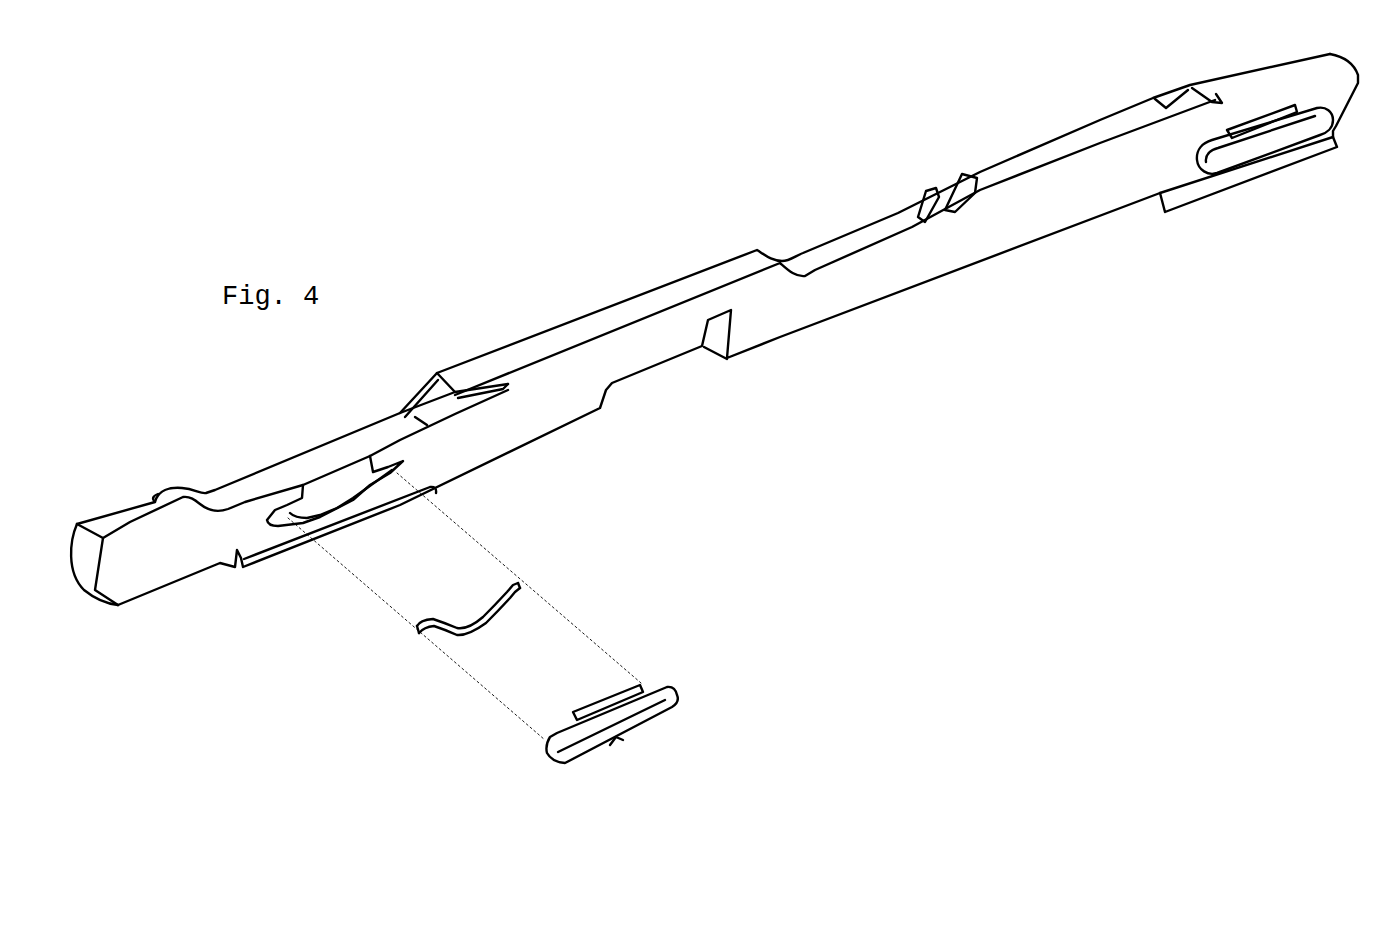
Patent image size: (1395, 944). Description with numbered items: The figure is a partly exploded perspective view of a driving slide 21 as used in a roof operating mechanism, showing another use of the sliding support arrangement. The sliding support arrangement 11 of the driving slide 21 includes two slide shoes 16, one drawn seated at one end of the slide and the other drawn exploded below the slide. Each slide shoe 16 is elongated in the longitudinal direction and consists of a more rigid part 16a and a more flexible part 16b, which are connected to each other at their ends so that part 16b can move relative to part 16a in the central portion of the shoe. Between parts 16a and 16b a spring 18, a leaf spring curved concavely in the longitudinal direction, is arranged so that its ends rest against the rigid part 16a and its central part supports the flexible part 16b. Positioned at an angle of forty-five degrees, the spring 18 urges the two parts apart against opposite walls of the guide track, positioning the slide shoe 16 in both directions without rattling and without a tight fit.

The sliding support arrangement 11 is at (497, 760).
The driving slide 21 is at (828, 303).
The slide shoe 16 is at (939, 459).
The more rigid part 16a is at (660, 682).
The more flexible part 16b is at (648, 735).
The spring 18 is at (523, 588).